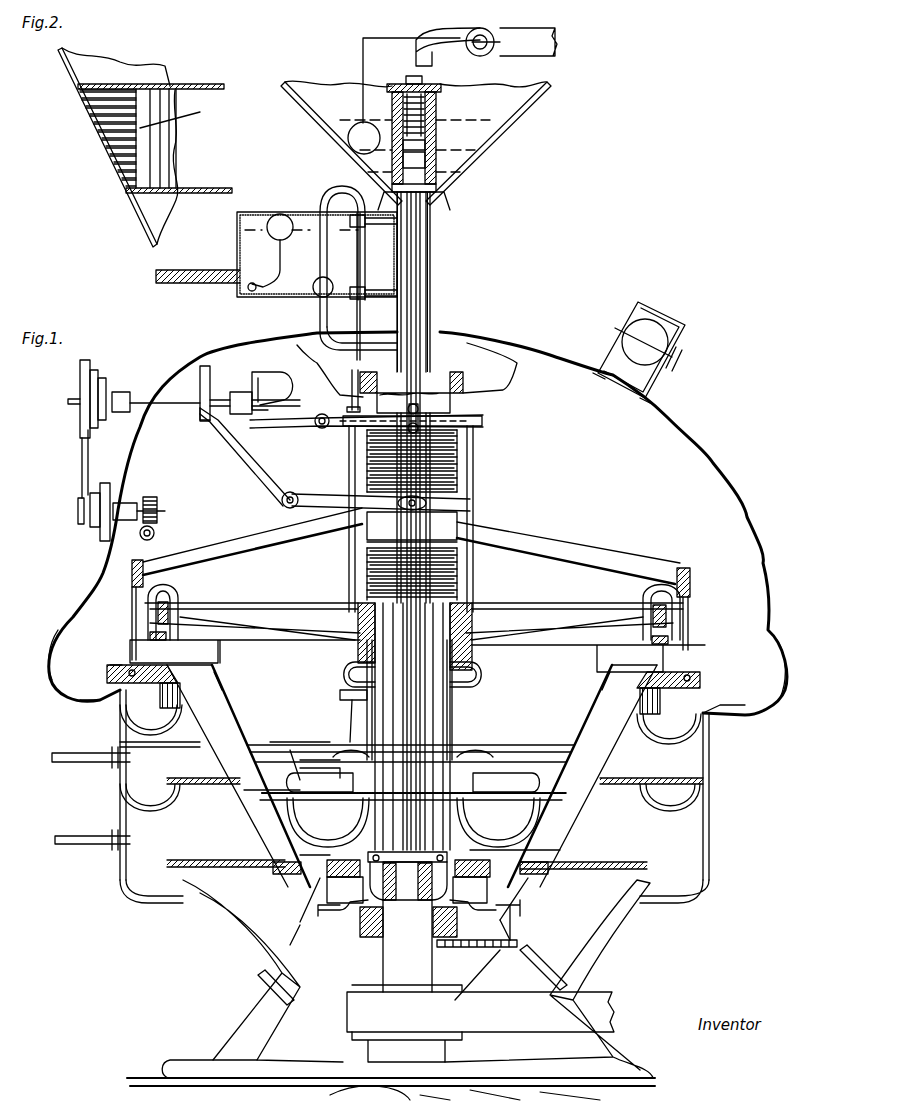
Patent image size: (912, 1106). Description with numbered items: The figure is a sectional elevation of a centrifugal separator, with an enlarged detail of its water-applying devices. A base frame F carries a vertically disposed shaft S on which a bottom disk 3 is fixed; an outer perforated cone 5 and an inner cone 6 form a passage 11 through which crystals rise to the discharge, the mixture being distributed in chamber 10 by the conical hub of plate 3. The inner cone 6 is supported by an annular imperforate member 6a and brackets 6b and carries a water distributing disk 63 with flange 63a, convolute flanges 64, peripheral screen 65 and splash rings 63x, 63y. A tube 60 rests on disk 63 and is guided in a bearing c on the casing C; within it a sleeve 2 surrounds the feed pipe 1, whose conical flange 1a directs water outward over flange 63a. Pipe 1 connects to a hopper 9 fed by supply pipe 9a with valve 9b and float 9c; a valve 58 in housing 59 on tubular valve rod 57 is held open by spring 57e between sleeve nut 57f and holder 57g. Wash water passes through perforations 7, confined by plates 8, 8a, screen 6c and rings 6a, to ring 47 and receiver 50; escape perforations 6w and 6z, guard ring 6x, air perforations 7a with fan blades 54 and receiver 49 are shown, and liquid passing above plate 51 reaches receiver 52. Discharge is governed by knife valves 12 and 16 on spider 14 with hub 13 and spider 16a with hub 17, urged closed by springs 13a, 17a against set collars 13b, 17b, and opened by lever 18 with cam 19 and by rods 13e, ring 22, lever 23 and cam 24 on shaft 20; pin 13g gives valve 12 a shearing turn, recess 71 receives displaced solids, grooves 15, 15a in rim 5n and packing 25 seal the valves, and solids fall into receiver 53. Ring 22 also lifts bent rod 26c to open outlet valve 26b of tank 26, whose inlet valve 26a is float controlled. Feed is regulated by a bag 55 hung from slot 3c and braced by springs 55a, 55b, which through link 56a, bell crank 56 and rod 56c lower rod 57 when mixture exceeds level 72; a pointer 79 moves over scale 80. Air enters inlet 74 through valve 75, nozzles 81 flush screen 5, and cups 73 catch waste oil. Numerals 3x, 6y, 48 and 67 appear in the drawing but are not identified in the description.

In FIG. 1, the feed pipe 1 is at (432, 268).
In FIG. 1, the conical flange 1a is at (350, 752).
In FIG. 1, the sleeve 2 is at (452, 640).
In FIG. 1, the bottom disk 3 is at (275, 876).
In FIG. 1, the segmental slot 3c is at (512, 836).
In FIG. 1, the collar 3x is at (348, 689).
In FIG. 1, the outer perforated cone 5 is at (270, 816).
In FIG. 1, the outer top rim 5n is at (84, 702).
In FIG. 2, the inner cone 6 is at (70, 64).
In FIG. 1, the inner cone 6 is at (252, 744).
In FIG. 2, the annular imperforate member 6a is at (110, 100).
In FIG. 1, the annular imperforate member 6a is at (332, 842).
In FIG. 1, the brackets 6b is at (490, 830).
In FIG. 2, the vertical screen 6c is at (177, 116).
In FIG. 1, the perforations 6w is at (282, 800).
In FIG. 1, the guard ring 6x is at (280, 740).
In FIG. 1, the drum part 6y is at (262, 775).
In FIG. 1, the perforations 6z is at (560, 750).
In FIG. 2, the perforations 7 is at (95, 132).
In FIG. 1, the perforations 7 is at (550, 780).
In FIG. 1, the air perforations 7a is at (226, 698).
In FIG. 2, the annular plate 8 is at (179, 202).
In FIG. 1, the annular plate 8 is at (290, 800).
In FIG. 2, the annular plate 8a is at (180, 84).
In FIG. 1, the annular plate 8a is at (292, 760).
In FIG. 1, the supply hopper 9 is at (505, 128).
In FIG. 1, the supply pipe 9a is at (486, 36).
In FIG. 1, the valve 9b is at (478, 26).
In FIG. 1, the float 9c is at (354, 122).
In FIG. 1, the separating chamber 10 is at (306, 847).
In FIG. 1, the passage 11 is at (412, 776).
In FIG. 1, the inner annular knife valve 12 is at (178, 612).
In FIG. 1, the hub 13 is at (356, 622).
In FIG. 1, the spring 13a is at (458, 570).
In FIG. 1, the set collar 13b is at (460, 540).
In FIG. 1, the rods 13e is at (349, 466).
In FIG. 1, the pin 13g is at (355, 645).
In FIG. 1, the spider 14 is at (282, 608).
In FIG. 1, the annular groove 15 is at (160, 668).
In FIG. 1, the annular groove 15a is at (108, 664).
In FIG. 1, the outer annular knife valve 16 is at (132, 600).
In FIG. 1, the spider 16a is at (234, 550).
In FIG. 1, the hub 17 is at (474, 506).
In FIG. 1, the spring 17a is at (458, 458).
In FIG. 1, the set collar 17b is at (436, 420).
In FIG. 1, the lever 18 is at (256, 460).
In FIG. 1, the cam 19 is at (212, 380).
In FIG. 1, the shaft 20 is at (142, 398).
In FIG. 1, the slidable ring 22 is at (482, 424).
In FIG. 1, the lever 23 is at (332, 414).
In FIG. 1, the cam 24 is at (280, 425).
In FIG. 1, the spring metal packing 25 is at (150, 638).
In FIG. 1, the tank 26 is at (237, 242).
In FIG. 1, the float controlled inlet valve 26a is at (242, 288).
In FIG. 1, the outlet valve 26b is at (318, 298).
In FIG. 1, the bent rod 26c is at (352, 284).
In FIG. 1, the annular plate 47 is at (190, 792).
In FIG. 1, the plate 48 is at (160, 753).
In FIG. 1, the receiver 49 is at (410, 724).
In FIG. 1, the receiver 50 is at (410, 796).
In FIG. 1, the annular plate 51 is at (218, 860).
In FIG. 1, the receiver 52 is at (414, 885).
In FIG. 1, the receiver 53 is at (417, 664).
In FIG. 1, the fan blades 54 is at (160, 692).
In FIG. 1, the flexible bag 55 is at (318, 900).
In FIG. 1, the spring fingers 55a is at (526, 888).
In FIG. 1, the spring fingers 55b is at (582, 898).
In FIG. 1, the bell crank lever 56 is at (424, 898).
In FIG. 1, the adjustable link 56a is at (380, 940).
In FIG. 1, the rod 56c is at (345, 812).
In FIG. 1, the valve rod 57 is at (432, 300).
In FIG. 1, the expansion spring 57e is at (438, 108).
In FIG. 1, the sleeve nut 57f is at (428, 146).
In FIG. 1, the tubular holder 57g is at (438, 126).
In FIG. 1, the valve 58 is at (448, 202).
In FIG. 1, the valve housing 59 is at (438, 188).
In FIG. 1, the tube 60 is at (454, 710).
In FIG. 1, the water distributing disk 63 is at (312, 766).
In FIG. 1, the flange 63a is at (476, 752).
In FIG. 1, the splash ring 63x is at (351, 721).
In FIG. 1, the splash ring 63y is at (312, 758).
In FIG. 1, the convolute flanges 64 is at (525, 772).
In FIG. 1, the peripheral screen 65 is at (262, 790).
In FIG. 1, the arm 67 is at (272, 786).
In FIG. 1, the cylindric recess 71 is at (222, 656).
In FIG. 1, the dotted line 72 is at (560, 851).
In FIG. 1, the cups 73 is at (486, 676).
In FIG. 1, the air inlet opening 74 is at (660, 314).
In FIG. 1, the valve 75 is at (636, 326).
In FIG. 1, the pointer 79 is at (518, 932).
In FIG. 1, the index scale 80 is at (480, 1023).
In FIG. 1, the movable nozzles 81 is at (118, 768).
In FIG. 1, the casing C is at (478, 343).
In FIG. 1, the bearing c is at (407, 378).
In FIG. 1, the base frame F is at (262, 1006).
In FIG. 1, the shaft S is at (407, 946).